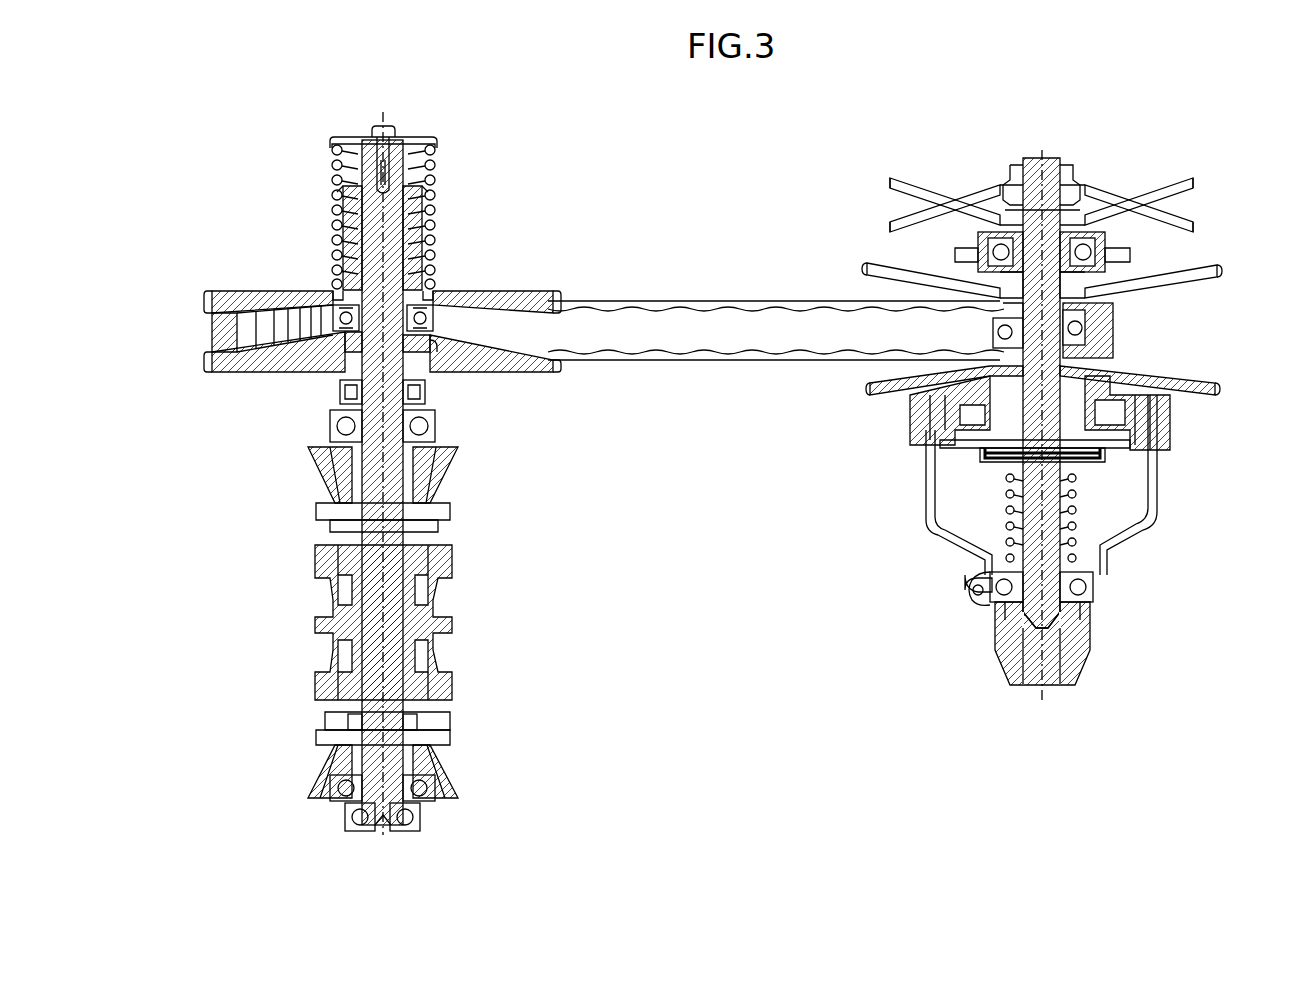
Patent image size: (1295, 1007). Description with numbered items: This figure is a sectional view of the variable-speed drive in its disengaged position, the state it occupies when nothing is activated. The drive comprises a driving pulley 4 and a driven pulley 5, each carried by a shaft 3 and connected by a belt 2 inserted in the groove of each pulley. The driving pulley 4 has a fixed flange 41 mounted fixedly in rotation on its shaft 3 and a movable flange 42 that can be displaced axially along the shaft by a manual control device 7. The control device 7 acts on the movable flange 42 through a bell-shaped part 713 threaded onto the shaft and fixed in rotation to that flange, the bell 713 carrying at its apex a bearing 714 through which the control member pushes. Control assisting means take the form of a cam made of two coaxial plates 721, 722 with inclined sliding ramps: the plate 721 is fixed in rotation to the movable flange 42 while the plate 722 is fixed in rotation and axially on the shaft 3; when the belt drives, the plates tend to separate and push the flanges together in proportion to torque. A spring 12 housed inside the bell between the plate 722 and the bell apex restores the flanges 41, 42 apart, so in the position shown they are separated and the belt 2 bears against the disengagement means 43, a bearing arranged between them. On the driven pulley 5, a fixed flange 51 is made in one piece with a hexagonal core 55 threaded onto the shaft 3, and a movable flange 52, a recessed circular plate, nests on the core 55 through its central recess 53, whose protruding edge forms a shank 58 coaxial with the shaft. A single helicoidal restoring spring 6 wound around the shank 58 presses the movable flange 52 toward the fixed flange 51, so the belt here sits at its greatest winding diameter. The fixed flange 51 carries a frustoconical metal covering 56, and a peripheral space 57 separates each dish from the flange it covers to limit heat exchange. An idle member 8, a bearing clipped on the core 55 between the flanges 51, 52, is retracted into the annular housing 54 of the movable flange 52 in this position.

The belt 2 is at (712, 360).
The shaft 3 is at (396, 492).
The driving pulley 4 is at (870, 369).
The driven pulley 5 is at (190, 326).
The restoring spring 6 is at (432, 222).
The control device 7 is at (930, 549).
The idle member 8 is at (432, 325).
The spring 12 is at (1100, 540).
The fixed flange 41 is at (1212, 273).
The movable flange 42 is at (1218, 389).
The disengagement means 43 is at (1160, 345).
The fixed flange 51 is at (262, 350).
The movable flange 52 is at (235, 298).
The central recess 53 is at (333, 310).
The annular housing 54 is at (430, 310).
The core 55 is at (408, 255).
The metal covering 56 is at (522, 360).
The peripheral space 57 is at (438, 345).
The shank 58 is at (425, 190).
The bell-shaped part 713 is at (1110, 560).
The bearing 714 is at (1080, 598).
The plate 721 is at (1100, 400).
The plate 722 is at (1120, 440).